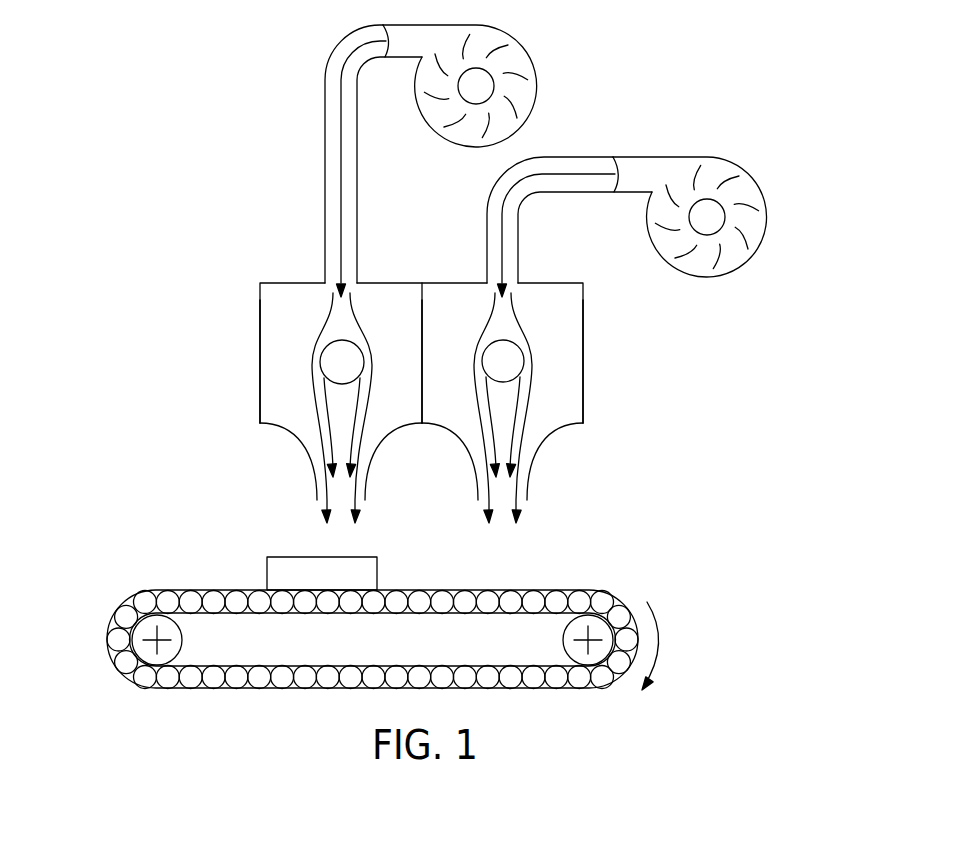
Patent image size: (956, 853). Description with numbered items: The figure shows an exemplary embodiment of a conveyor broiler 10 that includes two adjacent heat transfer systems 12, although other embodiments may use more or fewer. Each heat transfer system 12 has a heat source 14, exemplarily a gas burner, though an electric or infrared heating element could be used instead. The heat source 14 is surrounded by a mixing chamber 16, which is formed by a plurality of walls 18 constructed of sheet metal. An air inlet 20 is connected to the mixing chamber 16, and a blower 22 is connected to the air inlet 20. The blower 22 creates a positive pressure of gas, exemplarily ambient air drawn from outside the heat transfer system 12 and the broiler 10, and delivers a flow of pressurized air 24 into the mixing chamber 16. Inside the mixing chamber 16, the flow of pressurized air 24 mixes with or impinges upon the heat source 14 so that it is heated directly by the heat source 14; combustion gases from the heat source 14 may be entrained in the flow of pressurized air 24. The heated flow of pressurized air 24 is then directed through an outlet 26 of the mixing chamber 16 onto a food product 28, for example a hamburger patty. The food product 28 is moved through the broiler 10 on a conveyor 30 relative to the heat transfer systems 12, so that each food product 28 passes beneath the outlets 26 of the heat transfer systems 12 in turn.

The broiler 10 is at (669, 90).
The heat transfer system 12 is at (260, 318).
The heat source 14 is at (320, 353).
The mixing chamber 16 is at (281, 296).
The walls 18 is at (422, 318).
The air inlet 20 is at (325, 135).
The blower 22 is at (521, 43).
The flow of pressurized air 24 is at (340, 79).
The outlet 26 is at (312, 475).
The food product 28 is at (309, 585).
The conveyor 30 is at (133, 582).